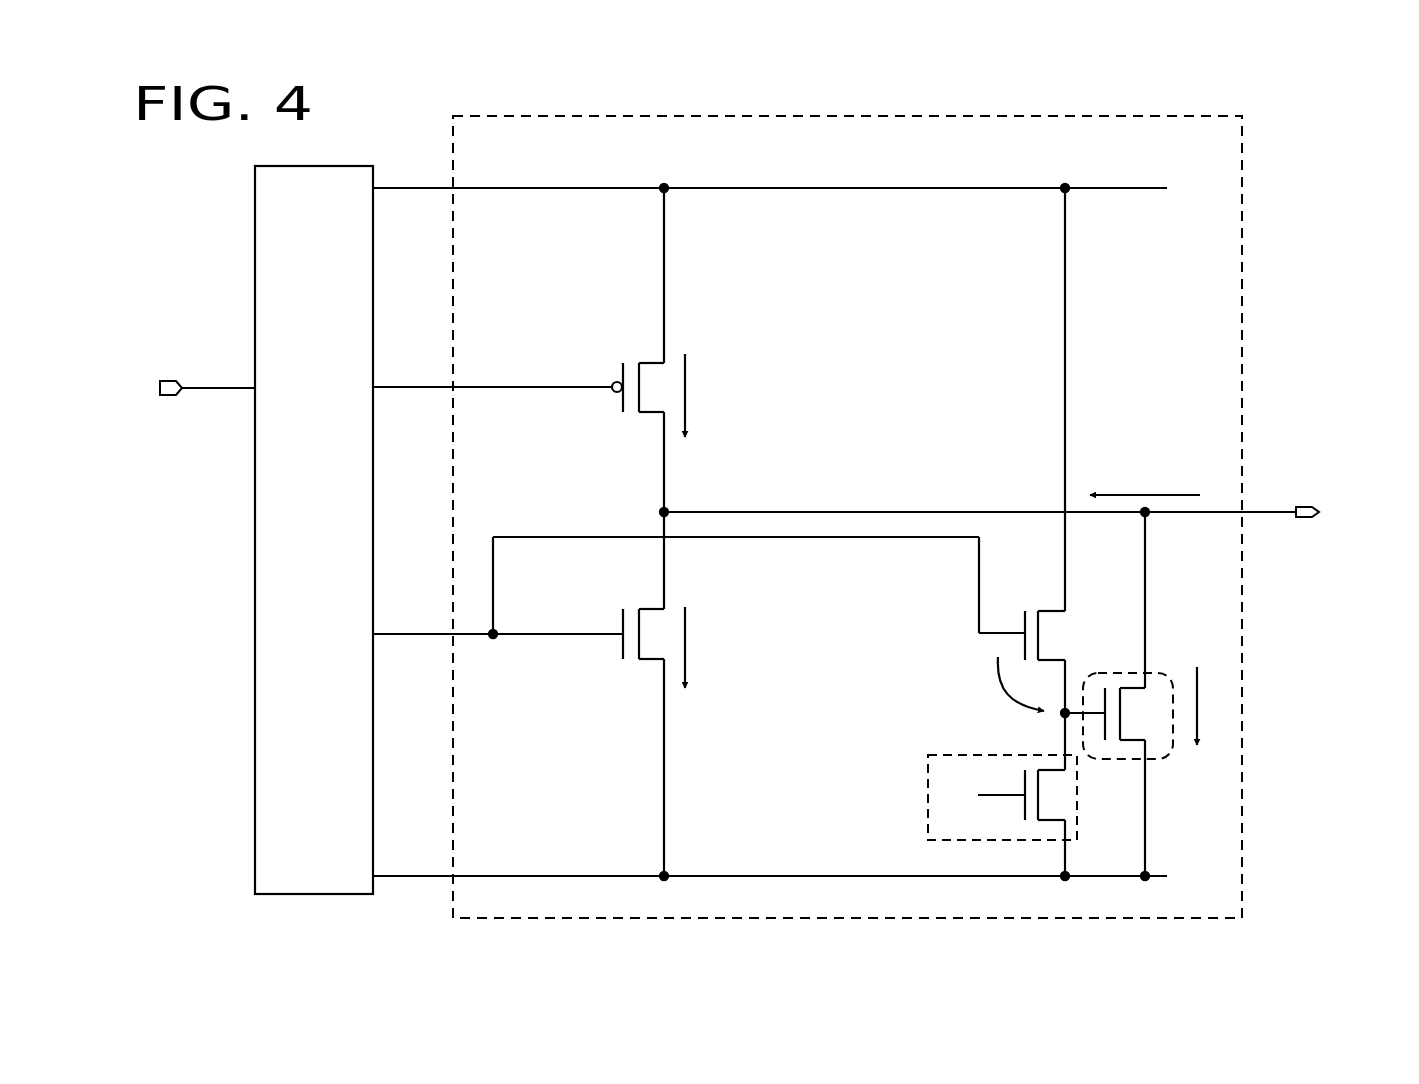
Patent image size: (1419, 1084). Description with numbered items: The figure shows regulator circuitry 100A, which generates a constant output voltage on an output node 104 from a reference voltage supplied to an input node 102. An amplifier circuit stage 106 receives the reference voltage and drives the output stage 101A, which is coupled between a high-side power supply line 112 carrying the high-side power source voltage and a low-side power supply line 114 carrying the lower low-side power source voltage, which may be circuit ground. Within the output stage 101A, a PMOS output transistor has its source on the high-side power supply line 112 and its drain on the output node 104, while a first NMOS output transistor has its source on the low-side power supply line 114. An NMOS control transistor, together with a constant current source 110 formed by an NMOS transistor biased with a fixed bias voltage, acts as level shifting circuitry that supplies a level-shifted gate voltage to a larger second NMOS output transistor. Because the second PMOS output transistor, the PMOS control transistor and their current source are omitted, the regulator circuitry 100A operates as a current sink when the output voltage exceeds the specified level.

The regulator circuitry 100A is at (1258, 162).
The output stage 101A is at (1176, 270).
The input node 102 is at (162, 380).
The output node 104 is at (1307, 505).
The amplifier circuit stage 106 is at (333, 600).
The constant current source 110 is at (926, 770).
The high-side power supply line 112 is at (745, 187).
The low-side power supply line 114 is at (745, 875).